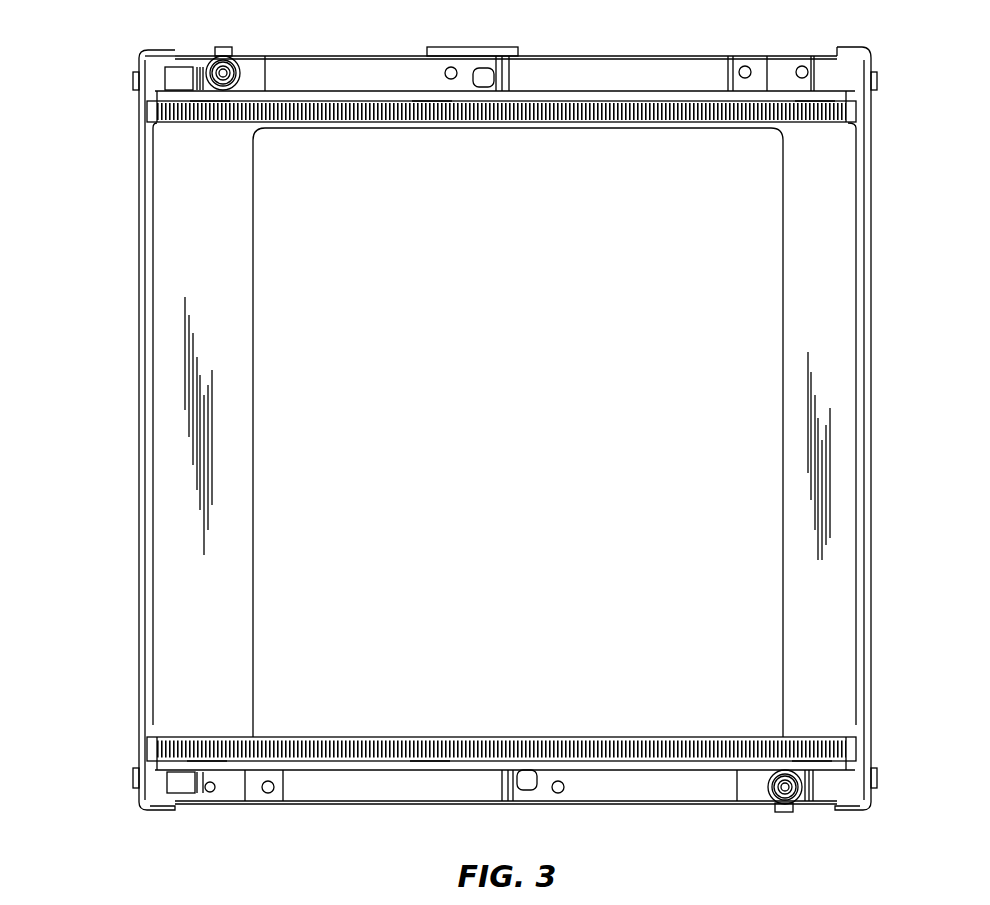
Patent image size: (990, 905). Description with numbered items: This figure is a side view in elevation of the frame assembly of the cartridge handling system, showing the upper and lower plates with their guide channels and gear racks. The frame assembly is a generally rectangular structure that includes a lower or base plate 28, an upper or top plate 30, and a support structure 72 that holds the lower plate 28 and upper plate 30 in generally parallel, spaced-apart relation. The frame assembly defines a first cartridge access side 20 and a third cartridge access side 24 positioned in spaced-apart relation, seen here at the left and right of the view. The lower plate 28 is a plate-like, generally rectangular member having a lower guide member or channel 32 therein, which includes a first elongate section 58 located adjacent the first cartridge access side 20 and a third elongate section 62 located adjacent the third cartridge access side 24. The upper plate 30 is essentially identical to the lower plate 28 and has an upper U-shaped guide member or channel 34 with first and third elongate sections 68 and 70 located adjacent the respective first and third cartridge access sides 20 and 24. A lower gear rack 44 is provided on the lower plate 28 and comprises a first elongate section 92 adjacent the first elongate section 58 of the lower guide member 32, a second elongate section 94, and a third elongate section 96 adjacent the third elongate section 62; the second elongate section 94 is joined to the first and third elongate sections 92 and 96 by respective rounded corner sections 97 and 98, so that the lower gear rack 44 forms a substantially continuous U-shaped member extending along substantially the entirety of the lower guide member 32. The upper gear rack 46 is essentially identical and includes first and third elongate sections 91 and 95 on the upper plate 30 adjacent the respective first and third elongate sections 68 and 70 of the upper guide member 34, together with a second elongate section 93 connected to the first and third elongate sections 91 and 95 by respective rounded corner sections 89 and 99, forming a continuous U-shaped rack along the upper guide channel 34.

The first cartridge access side 20 is at (139, 436).
The third cartridge access side 24 is at (871, 436).
The lower plate 28 is at (364, 803).
The upper plate 30 is at (598, 56).
The lower guide member 32 is at (181, 797).
The upper guide member 34 is at (184, 66).
The lower gear rack 44 is at (569, 740).
The upper gear rack 46 is at (568, 121).
The first elongate section 58 is at (166, 785).
The third elongate section 62 is at (844, 785).
The first elongate section 68 is at (166, 76).
The third elongate section 70 is at (844, 76).
The support structure 72 is at (253, 436).
The rounded corner section 89 is at (207, 123).
The first elongate section 91 is at (147, 133).
The first elongate section 92 is at (153, 725).
The second elongate section 93 is at (432, 123).
The second elongate section 94 is at (430, 737).
The third elongate section 95 is at (856, 133).
The third elongate section 96 is at (856, 725).
The rounded corner section 97 is at (206, 737).
The rounded corner section 98 is at (812, 737).
The rounded corner section 99 is at (815, 123).